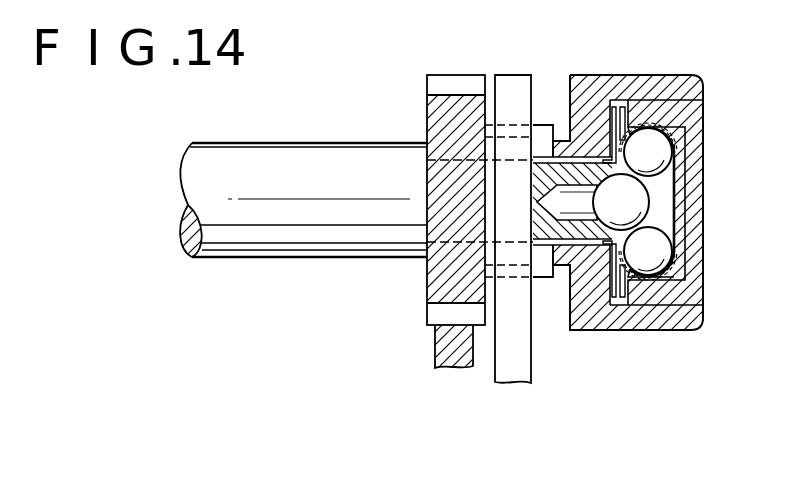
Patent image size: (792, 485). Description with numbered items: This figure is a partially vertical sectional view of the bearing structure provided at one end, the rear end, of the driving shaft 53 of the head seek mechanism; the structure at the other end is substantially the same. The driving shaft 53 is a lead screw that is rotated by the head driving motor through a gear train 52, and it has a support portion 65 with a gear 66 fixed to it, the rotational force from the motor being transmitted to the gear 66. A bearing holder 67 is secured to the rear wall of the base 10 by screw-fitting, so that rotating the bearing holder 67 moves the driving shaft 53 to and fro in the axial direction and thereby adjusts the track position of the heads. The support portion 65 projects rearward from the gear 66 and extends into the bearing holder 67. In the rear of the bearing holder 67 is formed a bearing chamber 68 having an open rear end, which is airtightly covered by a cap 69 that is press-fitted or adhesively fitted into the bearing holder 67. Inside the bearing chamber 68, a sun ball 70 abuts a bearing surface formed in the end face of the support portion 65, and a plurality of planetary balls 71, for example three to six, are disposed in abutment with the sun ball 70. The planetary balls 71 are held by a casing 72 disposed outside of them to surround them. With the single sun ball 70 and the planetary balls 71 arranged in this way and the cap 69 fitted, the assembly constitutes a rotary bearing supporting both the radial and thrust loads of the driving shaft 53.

The base 10 is at (520, 336).
The gear train 52 is at (448, 347).
The driving shaft 53 is at (334, 176).
The support portion 65 is at (583, 232).
The gear 66 is at (456, 88).
The bearing holder 67 is at (601, 94).
The bearing chamber 68 is at (627, 203).
The cap 69 is at (676, 293).
The sun ball 70 is at (655, 248).
The planetary balls 71 is at (655, 168).
The casing 72 is at (642, 129).